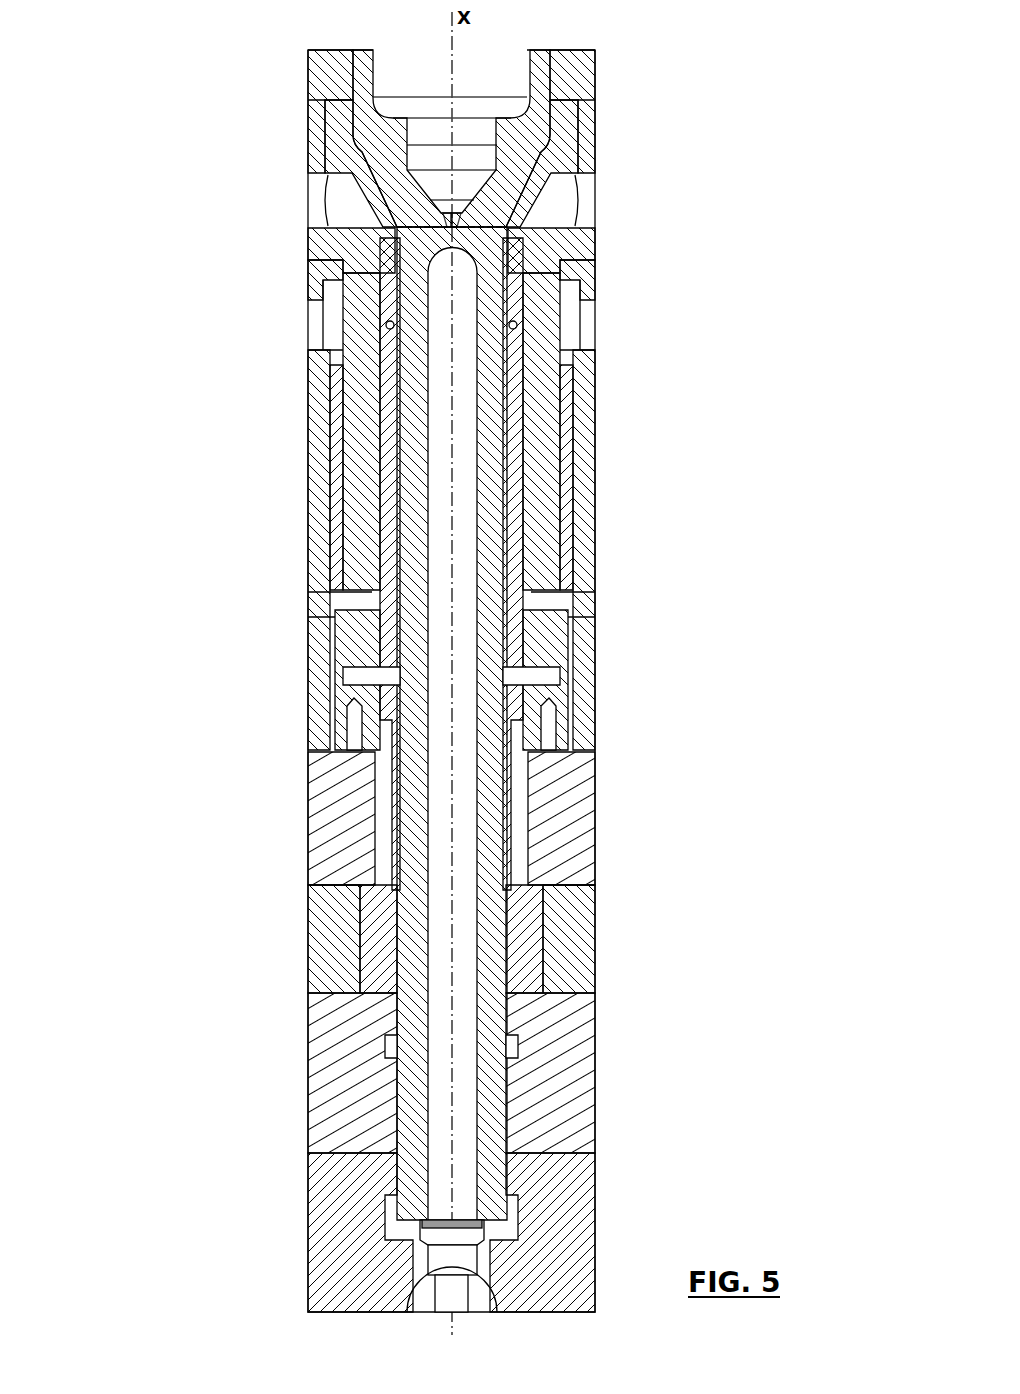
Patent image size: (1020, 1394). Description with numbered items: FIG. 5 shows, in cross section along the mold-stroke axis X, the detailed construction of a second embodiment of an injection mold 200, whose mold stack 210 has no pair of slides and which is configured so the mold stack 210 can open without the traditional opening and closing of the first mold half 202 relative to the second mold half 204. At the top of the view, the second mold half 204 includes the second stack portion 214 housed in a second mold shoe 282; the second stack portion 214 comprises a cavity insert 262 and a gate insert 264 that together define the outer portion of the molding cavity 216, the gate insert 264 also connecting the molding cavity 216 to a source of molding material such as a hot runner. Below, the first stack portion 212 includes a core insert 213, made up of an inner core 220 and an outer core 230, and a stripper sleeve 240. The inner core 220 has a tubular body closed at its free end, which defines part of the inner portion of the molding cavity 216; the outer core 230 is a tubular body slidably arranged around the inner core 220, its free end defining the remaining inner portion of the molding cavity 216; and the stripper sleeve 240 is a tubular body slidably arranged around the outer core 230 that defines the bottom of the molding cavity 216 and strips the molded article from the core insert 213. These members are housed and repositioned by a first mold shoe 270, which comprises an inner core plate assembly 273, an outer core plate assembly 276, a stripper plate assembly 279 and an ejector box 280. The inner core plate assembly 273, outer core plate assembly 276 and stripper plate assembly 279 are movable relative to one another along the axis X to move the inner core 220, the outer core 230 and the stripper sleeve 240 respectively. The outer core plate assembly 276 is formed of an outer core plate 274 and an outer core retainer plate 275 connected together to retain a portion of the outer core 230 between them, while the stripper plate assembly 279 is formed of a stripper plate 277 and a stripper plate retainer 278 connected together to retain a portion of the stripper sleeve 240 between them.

The injection mold 200 is at (112, 280).
The first mold half 202 is at (250, 363).
The second mold half 204 is at (245, 258).
The mold stack 210 is at (760, 90).
The first stack portion 212 is at (698, 437).
The core insert 213 is at (650, 475).
The second stack portion 214 is at (693, 87).
The molding cavity 216 is at (574, 266).
The inner core 220 is at (490, 526).
The outer core 230 is at (520, 490).
The stripper sleeve 240 is at (553, 455).
The cavity insert 262 is at (582, 152).
The gate insert 264 is at (580, 125).
The first mold shoe 270 is at (117, 1237).
The inner core plate assembly 273 is at (306, 1205).
The outer core plate 274 is at (306, 1007).
The outer core retainer plate 275 is at (306, 923).
The outer core plate assembly 276 is at (189, 935).
The stripper plate 277 is at (306, 785).
The stripper plate retainer 278 is at (306, 708).
The stripper plate assembly 279 is at (189, 712).
The ejector box 280 is at (302, 484).
The second mold shoe 282 is at (308, 245).